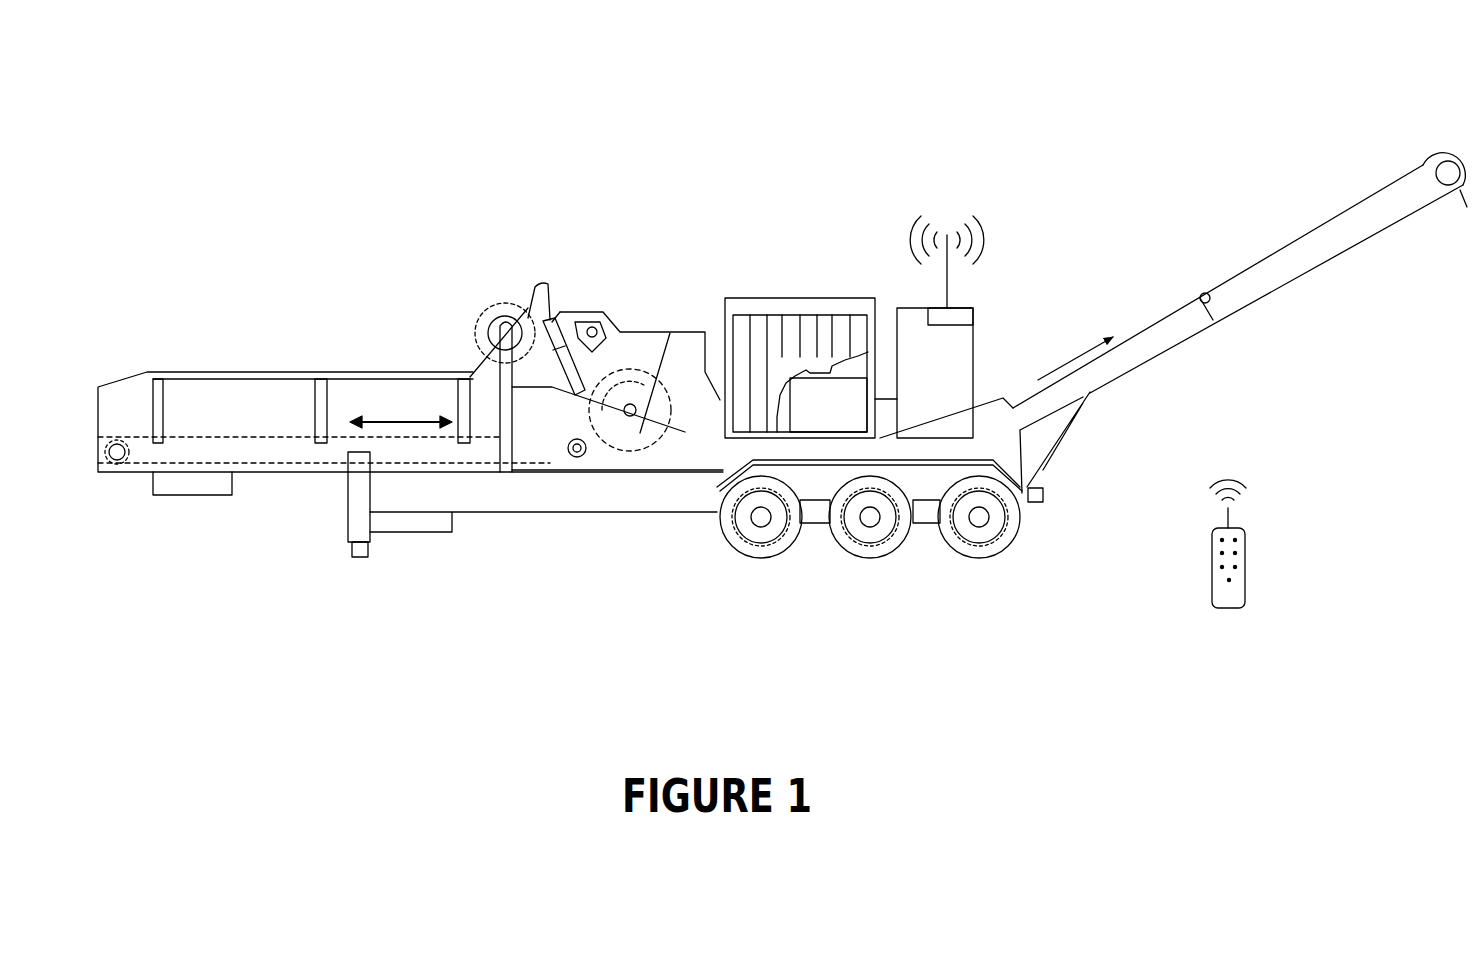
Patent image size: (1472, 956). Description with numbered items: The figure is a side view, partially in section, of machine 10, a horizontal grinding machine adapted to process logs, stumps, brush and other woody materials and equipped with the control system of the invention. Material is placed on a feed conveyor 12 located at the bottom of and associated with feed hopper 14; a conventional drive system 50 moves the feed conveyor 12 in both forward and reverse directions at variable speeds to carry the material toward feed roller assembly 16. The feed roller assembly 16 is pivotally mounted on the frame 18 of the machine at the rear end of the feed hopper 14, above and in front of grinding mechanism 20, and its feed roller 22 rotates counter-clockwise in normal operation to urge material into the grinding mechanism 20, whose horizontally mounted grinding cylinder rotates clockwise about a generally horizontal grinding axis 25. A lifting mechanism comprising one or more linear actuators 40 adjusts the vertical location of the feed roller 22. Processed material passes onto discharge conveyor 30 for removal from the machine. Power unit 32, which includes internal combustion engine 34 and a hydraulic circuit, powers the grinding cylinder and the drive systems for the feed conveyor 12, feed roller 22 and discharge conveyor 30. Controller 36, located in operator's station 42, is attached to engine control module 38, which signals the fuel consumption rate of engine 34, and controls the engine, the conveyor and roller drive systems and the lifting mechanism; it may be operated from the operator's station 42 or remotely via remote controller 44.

The machine 10 is at (527, 125).
The feed conveyor 12 is at (232, 433).
The feed hopper 14 is at (318, 366).
The feed roller assembly 16 is at (557, 310).
The frame 18 is at (657, 328).
The grinding mechanism 20 is at (628, 455).
The feed roller 22 is at (492, 303).
The grinding axis 25 is at (647, 413).
The discharge conveyor 30 is at (1155, 310).
The power unit 32 is at (783, 293).
The internal combustion engine 34 is at (832, 413).
The controller 36 is at (957, 317).
The engine control module 38 is at (825, 360).
The linear actuators 40 is at (580, 377).
The operator's station 42 is at (980, 367).
The remote controller 44 is at (1250, 562).
The drive system 50 is at (572, 455).